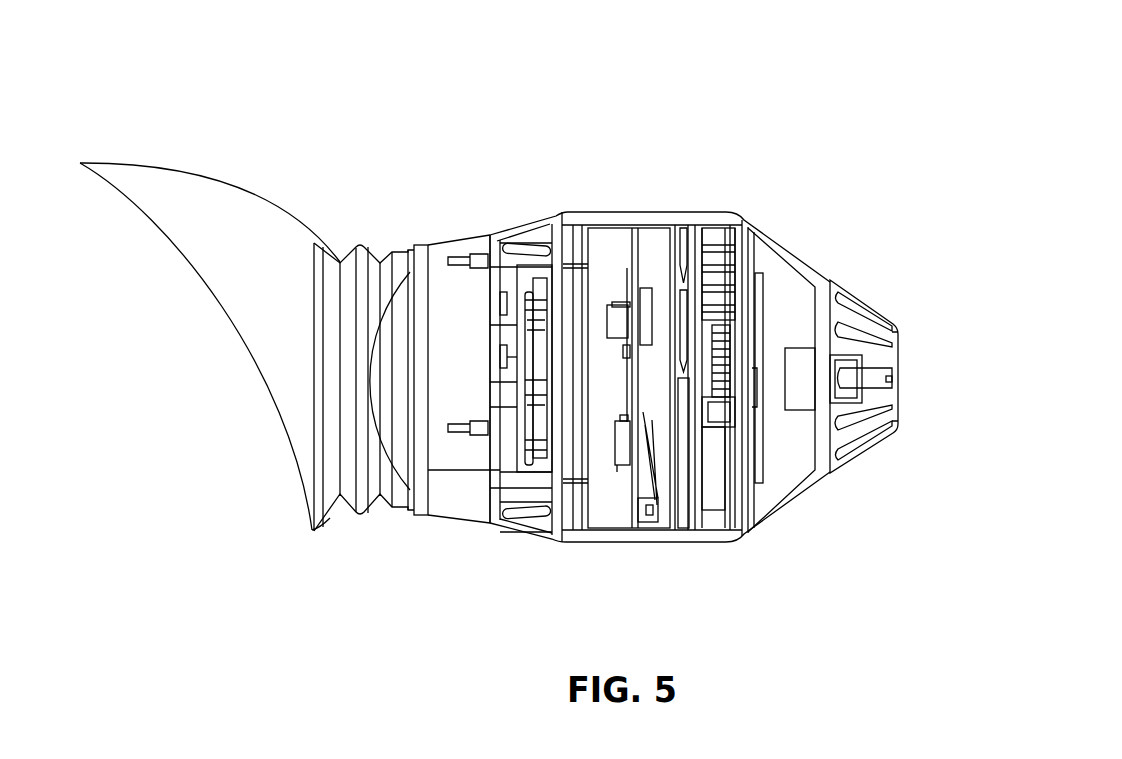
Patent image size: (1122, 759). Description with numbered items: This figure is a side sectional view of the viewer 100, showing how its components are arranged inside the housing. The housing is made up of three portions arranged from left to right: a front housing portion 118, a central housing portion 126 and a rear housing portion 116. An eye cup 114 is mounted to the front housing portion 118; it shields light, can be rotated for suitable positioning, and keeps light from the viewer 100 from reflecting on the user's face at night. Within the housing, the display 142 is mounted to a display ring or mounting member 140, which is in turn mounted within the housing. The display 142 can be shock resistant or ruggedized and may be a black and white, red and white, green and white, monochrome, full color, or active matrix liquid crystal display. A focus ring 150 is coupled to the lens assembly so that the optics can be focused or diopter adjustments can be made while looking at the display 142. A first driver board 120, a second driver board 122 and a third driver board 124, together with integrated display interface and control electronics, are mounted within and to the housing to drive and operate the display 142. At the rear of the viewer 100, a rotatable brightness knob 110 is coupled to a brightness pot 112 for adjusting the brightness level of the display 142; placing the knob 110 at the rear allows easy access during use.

The viewer 100 is at (768, 118).
The brightness knob 110 is at (860, 298).
The brightness pot 112 is at (797, 408).
The eye cup 114 is at (203, 183).
The rear housing portion 116 is at (737, 542).
The front housing portion 118 is at (447, 507).
The first driver board 120 is at (766, 284).
The second driver board 122 is at (696, 226).
The third driver board 124 is at (629, 508).
The central housing portion 126 is at (683, 543).
The display ring or mounting member 140 is at (619, 387).
The display 142 is at (532, 449).
The focus ring 150 is at (516, 388).